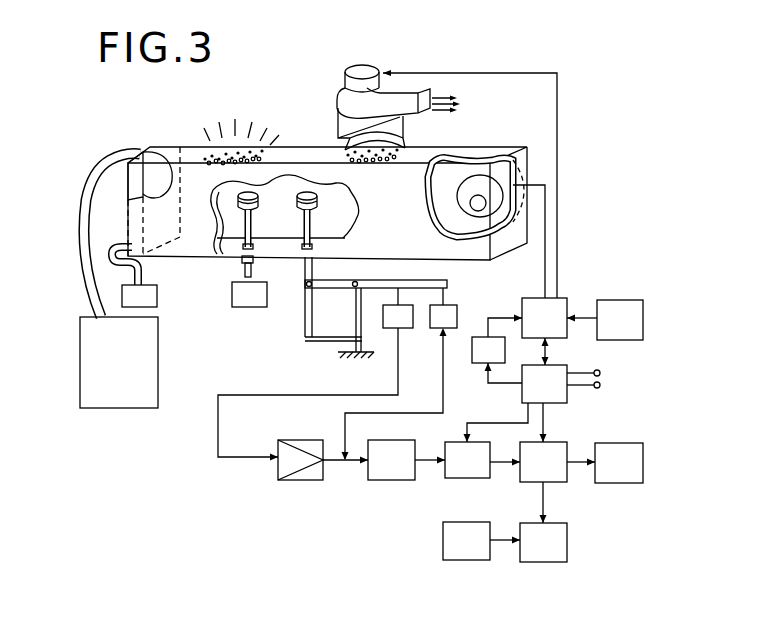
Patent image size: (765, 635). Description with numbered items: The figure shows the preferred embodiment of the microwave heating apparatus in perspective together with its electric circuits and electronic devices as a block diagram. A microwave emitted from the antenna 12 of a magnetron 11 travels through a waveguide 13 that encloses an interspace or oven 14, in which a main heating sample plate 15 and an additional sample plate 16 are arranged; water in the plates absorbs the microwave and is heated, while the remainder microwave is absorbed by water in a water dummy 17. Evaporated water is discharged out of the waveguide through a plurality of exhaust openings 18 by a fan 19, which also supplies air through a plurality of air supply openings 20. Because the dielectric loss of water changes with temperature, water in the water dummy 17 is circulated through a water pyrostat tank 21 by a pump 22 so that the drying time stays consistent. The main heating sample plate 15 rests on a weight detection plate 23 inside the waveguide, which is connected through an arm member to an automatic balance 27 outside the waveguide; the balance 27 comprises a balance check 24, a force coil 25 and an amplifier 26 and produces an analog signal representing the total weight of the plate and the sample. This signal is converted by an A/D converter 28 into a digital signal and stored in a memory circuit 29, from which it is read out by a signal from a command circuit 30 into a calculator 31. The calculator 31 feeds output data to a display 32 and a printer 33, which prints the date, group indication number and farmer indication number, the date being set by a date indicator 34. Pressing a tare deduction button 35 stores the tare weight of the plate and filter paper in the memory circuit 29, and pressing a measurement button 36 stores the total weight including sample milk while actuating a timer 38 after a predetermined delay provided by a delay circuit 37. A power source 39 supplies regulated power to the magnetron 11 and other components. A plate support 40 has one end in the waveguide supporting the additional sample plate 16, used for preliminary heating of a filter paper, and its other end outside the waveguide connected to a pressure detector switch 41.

The magnetron 11 is at (488, 165).
The antenna 12 is at (470, 205).
The waveguide 13 is at (195, 148).
The oven 14 is at (226, 225).
The main heating sample plate 15 is at (347, 218).
The additional sample plate 16 is at (214, 207).
The water dummy 17 is at (132, 187).
The exhaust openings 18 is at (388, 157).
The fan 19 is at (345, 82).
The air supply openings 20 is at (262, 150).
The water pyrostat tank 21 is at (123, 396).
The pump 22 is at (157, 297).
The weight detection plate 23 is at (304, 208).
The balance check 24 is at (391, 332).
The force coil 25 is at (436, 328).
The amplifier 26 is at (305, 472).
The automatic balance 27 is at (444, 281).
The A/D converter 28 is at (390, 472).
The memory circuit 29 is at (472, 480).
The command circuit 30 is at (523, 392).
The calculator 31 is at (557, 478).
The display 32 is at (622, 480).
The printer 33 is at (551, 558).
The date indicator 34 is at (473, 555).
The tare deduction button 35 is at (600, 371).
The measurement button 36 is at (600, 386).
The delay circuit 37 is at (480, 360).
The timer 38 is at (537, 300).
The power source 39 is at (620, 302).
The plate support 40 is at (245, 232).
The pressure detector switch 41 is at (251, 306).